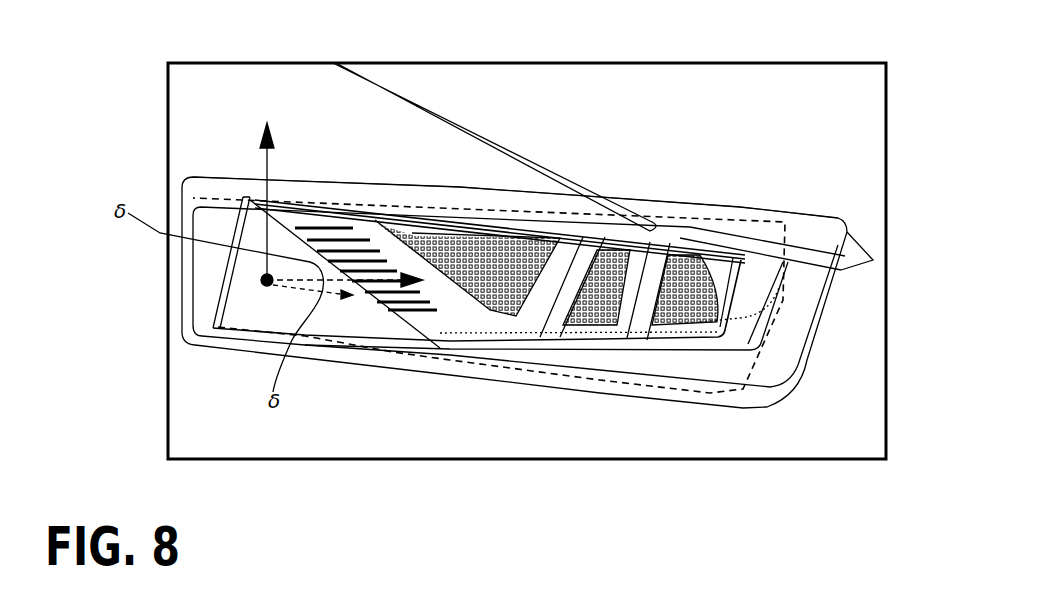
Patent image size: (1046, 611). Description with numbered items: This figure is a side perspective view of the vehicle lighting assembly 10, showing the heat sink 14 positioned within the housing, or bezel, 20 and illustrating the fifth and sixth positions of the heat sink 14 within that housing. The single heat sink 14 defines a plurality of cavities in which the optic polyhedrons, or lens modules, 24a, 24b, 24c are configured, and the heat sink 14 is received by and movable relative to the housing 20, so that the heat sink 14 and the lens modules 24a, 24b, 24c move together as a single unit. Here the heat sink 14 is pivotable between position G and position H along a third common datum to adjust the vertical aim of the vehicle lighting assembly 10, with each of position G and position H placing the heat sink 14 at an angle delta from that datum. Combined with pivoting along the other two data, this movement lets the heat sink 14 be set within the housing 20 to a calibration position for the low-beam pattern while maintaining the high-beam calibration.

The vehicle lighting assembly 10 is at (808, 103).
The heat sink 14 is at (777, 282).
The housing 20 is at (398, 362).
The optic polyhedron 24a is at (477, 232).
The optic polyhedron 24b is at (623, 250).
The optic polyhedron 24c is at (710, 258).
The position G is at (777, 210).
The position H is at (713, 393).